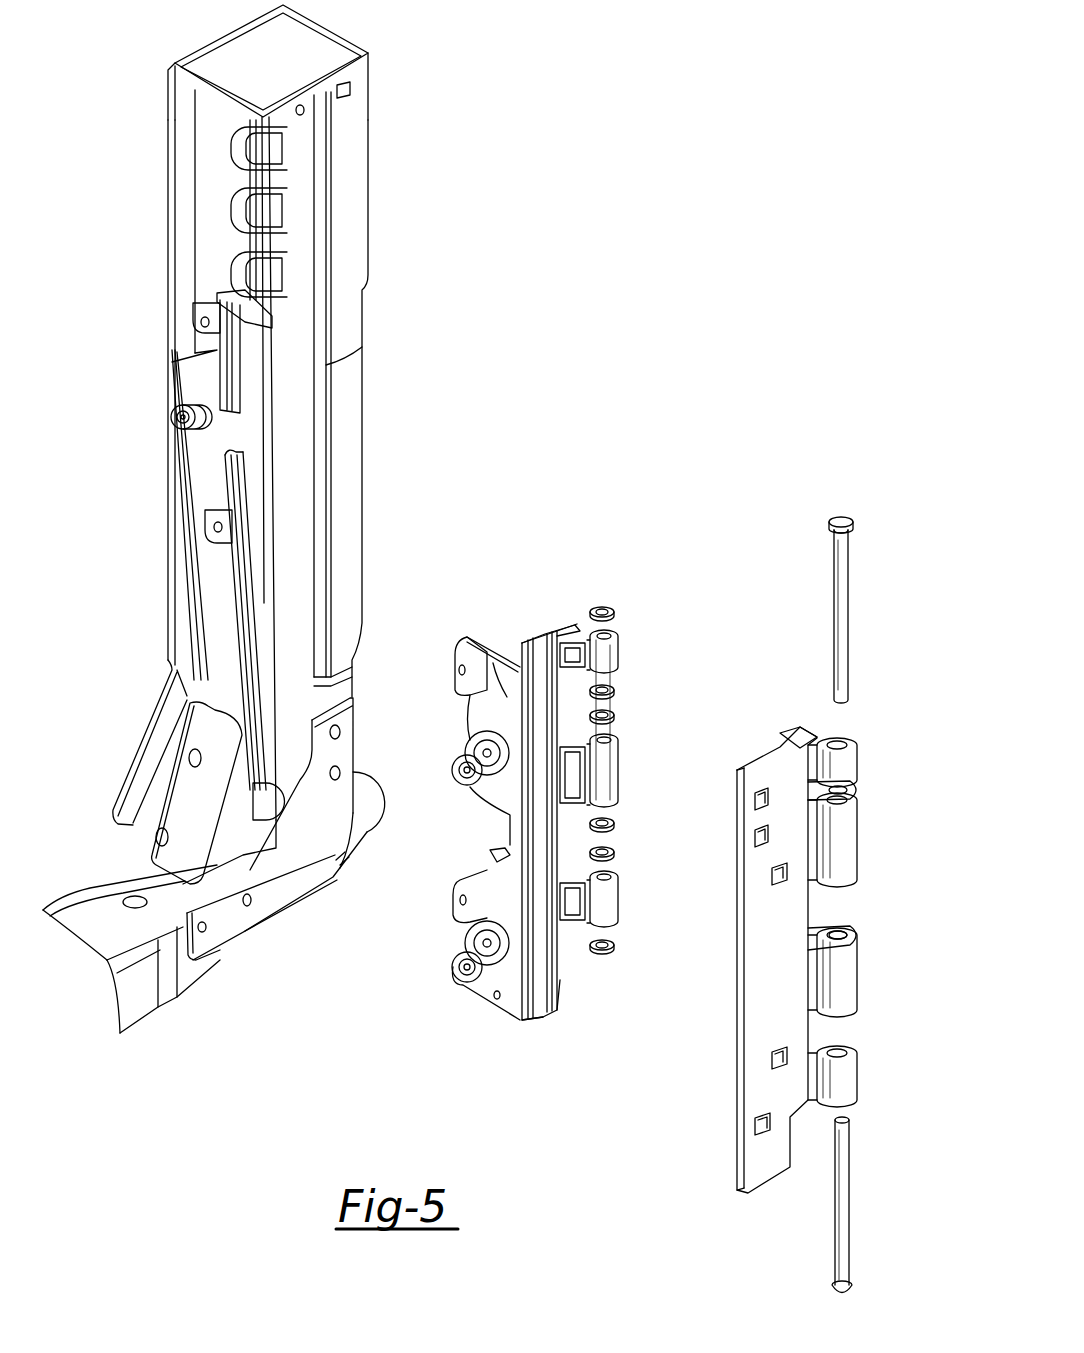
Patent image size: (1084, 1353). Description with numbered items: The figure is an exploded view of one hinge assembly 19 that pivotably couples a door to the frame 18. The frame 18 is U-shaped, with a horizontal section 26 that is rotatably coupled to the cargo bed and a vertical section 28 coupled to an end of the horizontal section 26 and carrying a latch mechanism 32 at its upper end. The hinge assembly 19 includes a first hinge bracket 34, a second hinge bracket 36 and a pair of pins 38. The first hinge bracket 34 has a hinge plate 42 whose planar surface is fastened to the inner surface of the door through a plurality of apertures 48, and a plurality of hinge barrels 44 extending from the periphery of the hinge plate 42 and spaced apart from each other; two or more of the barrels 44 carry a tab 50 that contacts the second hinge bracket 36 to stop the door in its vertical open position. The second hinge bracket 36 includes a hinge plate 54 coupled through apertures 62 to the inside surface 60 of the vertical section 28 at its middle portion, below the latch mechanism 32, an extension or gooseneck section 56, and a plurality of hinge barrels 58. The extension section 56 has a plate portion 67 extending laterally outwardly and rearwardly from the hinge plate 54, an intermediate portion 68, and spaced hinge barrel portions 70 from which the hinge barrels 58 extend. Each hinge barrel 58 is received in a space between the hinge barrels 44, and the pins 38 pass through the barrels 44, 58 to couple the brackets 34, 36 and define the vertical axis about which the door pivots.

The frame 18 is at (386, 262).
The hinge assembly 19 is at (725, 566).
The horizontal section 26 is at (93, 923).
The vertical section 28 is at (345, 425).
The latch mechanism 32 is at (345, 147).
The first hinge bracket 34 is at (870, 746).
The second hinge bracket 36 is at (458, 1000).
The pin 38 is at (845, 602).
The hinge plate 42 is at (777, 937).
The hinge barrel 44 is at (850, 758).
The aperture 48 is at (783, 873).
The tab 50 is at (853, 783).
The hinge plate 54 is at (497, 670).
The extension section 56 is at (574, 626).
The hinge barrel 58 is at (608, 656).
The inside surface 60 is at (253, 448).
The aperture 62 is at (457, 673).
The plate portion 67 is at (540, 1005).
The intermediate portion 68 is at (565, 975).
The hinge barrel portion 70 is at (573, 665).